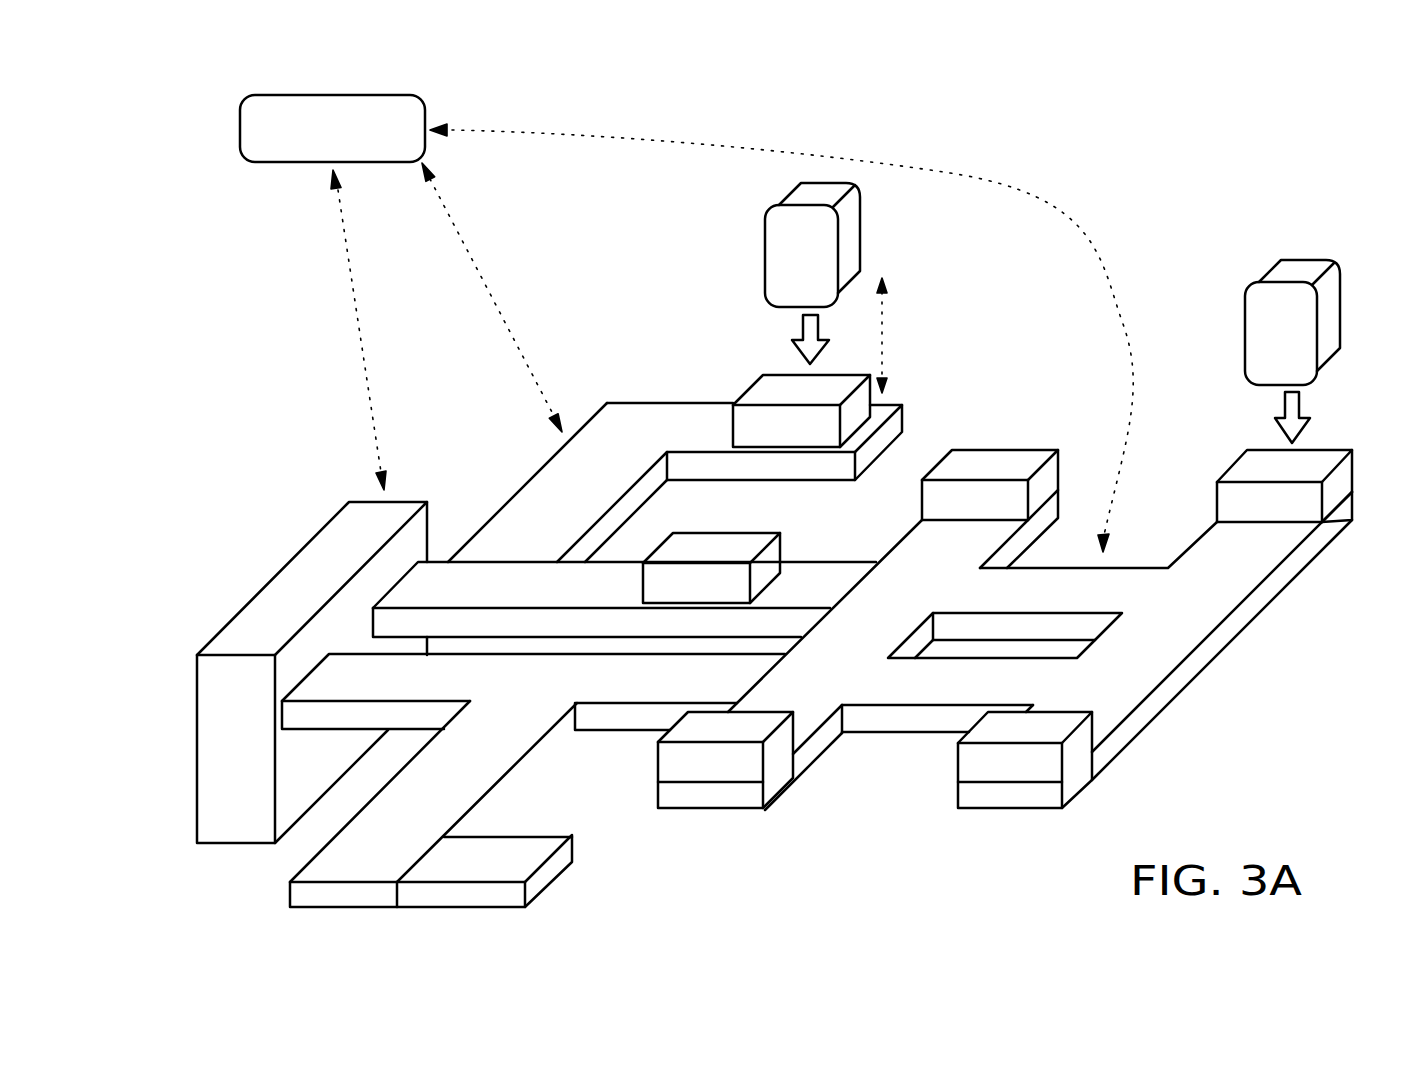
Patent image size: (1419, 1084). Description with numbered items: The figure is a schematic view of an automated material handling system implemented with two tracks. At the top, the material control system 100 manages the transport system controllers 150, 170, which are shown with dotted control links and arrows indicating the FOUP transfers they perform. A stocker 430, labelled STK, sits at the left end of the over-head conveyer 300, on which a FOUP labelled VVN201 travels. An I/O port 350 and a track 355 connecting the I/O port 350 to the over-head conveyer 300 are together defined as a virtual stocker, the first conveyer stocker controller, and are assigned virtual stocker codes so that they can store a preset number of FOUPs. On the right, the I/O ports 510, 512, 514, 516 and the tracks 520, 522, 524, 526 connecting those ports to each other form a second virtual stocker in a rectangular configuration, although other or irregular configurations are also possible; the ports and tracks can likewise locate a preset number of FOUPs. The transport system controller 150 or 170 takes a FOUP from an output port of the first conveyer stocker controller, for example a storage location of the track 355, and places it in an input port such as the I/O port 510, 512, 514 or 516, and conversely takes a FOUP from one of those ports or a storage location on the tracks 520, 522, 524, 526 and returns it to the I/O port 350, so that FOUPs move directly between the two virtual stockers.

The material control system 100 is at (240, 126).
The transport system controller 150 is at (765, 250).
The transport system controller 170 is at (1245, 334).
The over-head conveyer 300 is at (795, 563).
The I/O port 350 is at (903, 419).
The track 355 is at (528, 480).
The stocker 430 is at (197, 748).
The I/O port 510 is at (1059, 507).
The I/O port 512 is at (707, 812).
The I/O port 514 is at (1327, 532).
The I/O port 516 is at (1003, 812).
The track 520 is at (1147, 567).
The track 522 is at (908, 530).
The track 524 is at (900, 735).
The track 526 is at (1213, 643).